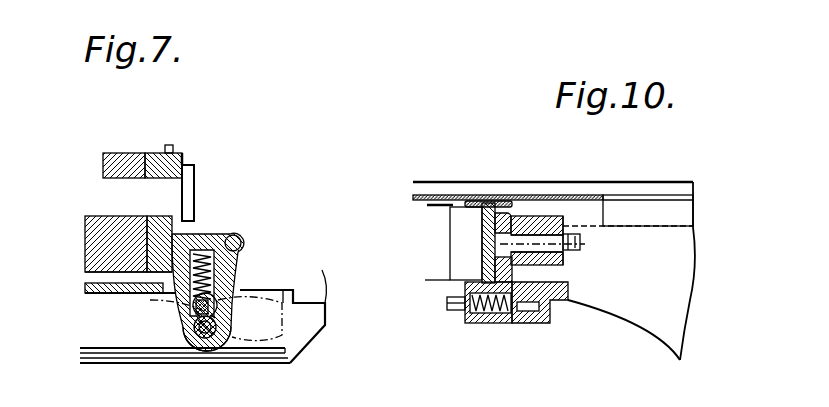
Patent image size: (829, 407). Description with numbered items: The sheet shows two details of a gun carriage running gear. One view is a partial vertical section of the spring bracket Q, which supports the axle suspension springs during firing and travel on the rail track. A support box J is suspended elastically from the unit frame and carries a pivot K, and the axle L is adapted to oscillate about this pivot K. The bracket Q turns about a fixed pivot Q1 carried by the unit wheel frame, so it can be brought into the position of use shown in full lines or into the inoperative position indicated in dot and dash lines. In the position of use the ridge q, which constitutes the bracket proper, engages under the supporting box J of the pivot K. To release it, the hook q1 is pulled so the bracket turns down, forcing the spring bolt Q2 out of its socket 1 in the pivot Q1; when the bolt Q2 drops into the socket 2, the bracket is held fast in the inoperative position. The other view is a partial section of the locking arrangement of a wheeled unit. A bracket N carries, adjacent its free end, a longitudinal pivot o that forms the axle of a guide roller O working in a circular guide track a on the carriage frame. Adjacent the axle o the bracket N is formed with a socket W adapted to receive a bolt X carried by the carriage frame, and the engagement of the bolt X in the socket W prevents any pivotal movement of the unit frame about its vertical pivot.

In FIG. 7, the pivot K is at (174, 190).
In FIG. 7, the axle L is at (112, 244).
In FIG. 7, the box J is at (118, 300).
In FIG. 7, the ridge q is at (184, 243).
In FIG. 7, the hook q1 is at (238, 246).
In FIG. 7, the spring bolt Q2 is at (218, 295).
In FIG. 7, the spring bracket Q is at (181, 322).
In FIG. 7, the fixed pivot Q1 is at (191, 346).
In FIG. 7, the socket 1 is at (204, 346).
In FIG. 7, the socket 2 is at (212, 346).
In FIG. 10, the guide a is at (482, 250).
In FIG. 10, the roller O is at (500, 218).
In FIG. 10, the pivot o is at (538, 242).
In FIG. 10, the bolt X is at (521, 325).
In FIG. 10, the socket W is at (548, 312).
In FIG. 10, the bracket N is at (646, 318).